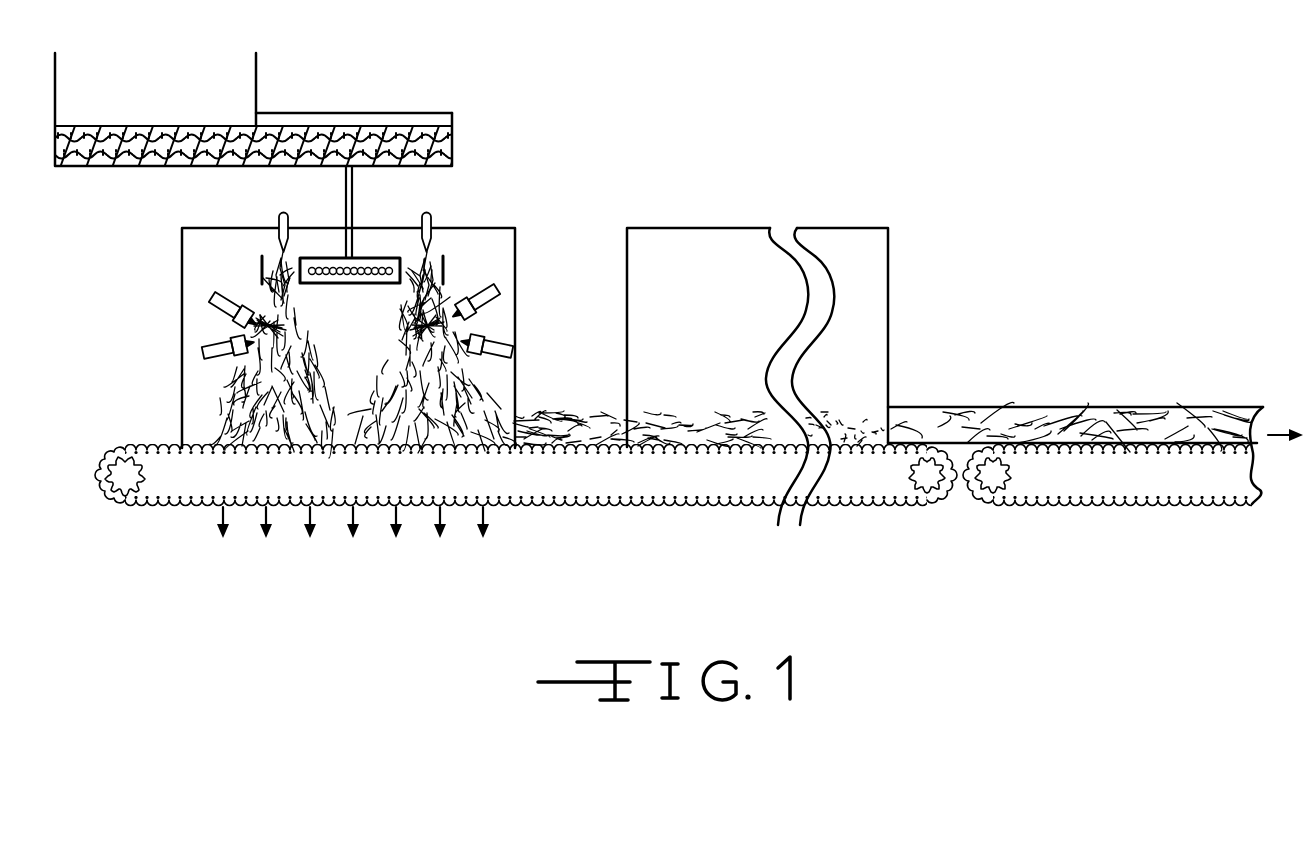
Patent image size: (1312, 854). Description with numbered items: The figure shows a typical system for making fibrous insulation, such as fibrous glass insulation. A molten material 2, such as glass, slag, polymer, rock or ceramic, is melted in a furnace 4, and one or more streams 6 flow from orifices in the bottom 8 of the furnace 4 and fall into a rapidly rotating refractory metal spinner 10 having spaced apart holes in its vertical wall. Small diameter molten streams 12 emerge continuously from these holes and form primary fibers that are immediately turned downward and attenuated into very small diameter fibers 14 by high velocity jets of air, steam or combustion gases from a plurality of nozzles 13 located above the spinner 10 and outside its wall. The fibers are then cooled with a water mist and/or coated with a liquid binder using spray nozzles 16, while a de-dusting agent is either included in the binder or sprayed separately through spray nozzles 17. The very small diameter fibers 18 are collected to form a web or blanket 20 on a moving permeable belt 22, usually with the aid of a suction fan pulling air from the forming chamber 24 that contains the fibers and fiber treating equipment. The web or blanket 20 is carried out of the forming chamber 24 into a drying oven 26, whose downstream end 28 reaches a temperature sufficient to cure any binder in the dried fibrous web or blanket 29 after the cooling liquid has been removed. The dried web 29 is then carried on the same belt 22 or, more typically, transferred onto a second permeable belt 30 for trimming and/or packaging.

The molten material 2 is at (400, 137).
The furnace 4 is at (335, 108).
The stream 6 is at (356, 203).
The bottom 8 is at (417, 167).
The spinner 10 is at (321, 256).
The molten streams 12 is at (421, 266).
The nozzles 13 is at (281, 238).
The very small diameter fibers 14 is at (270, 314).
The spray nozzles 16 is at (210, 299).
The spray nozzles 17 is at (211, 350).
The very small diameter fibers 18 is at (290, 400).
The web or blanket 20 is at (566, 431).
The permeable belt 22 is at (161, 446).
The forming chamber 24 is at (181, 318).
The drying oven 26 is at (692, 226).
The downstream end 28 is at (862, 330).
The dried fibrous web or blanket 29 is at (932, 425).
The second permeable belt 30 is at (1019, 494).